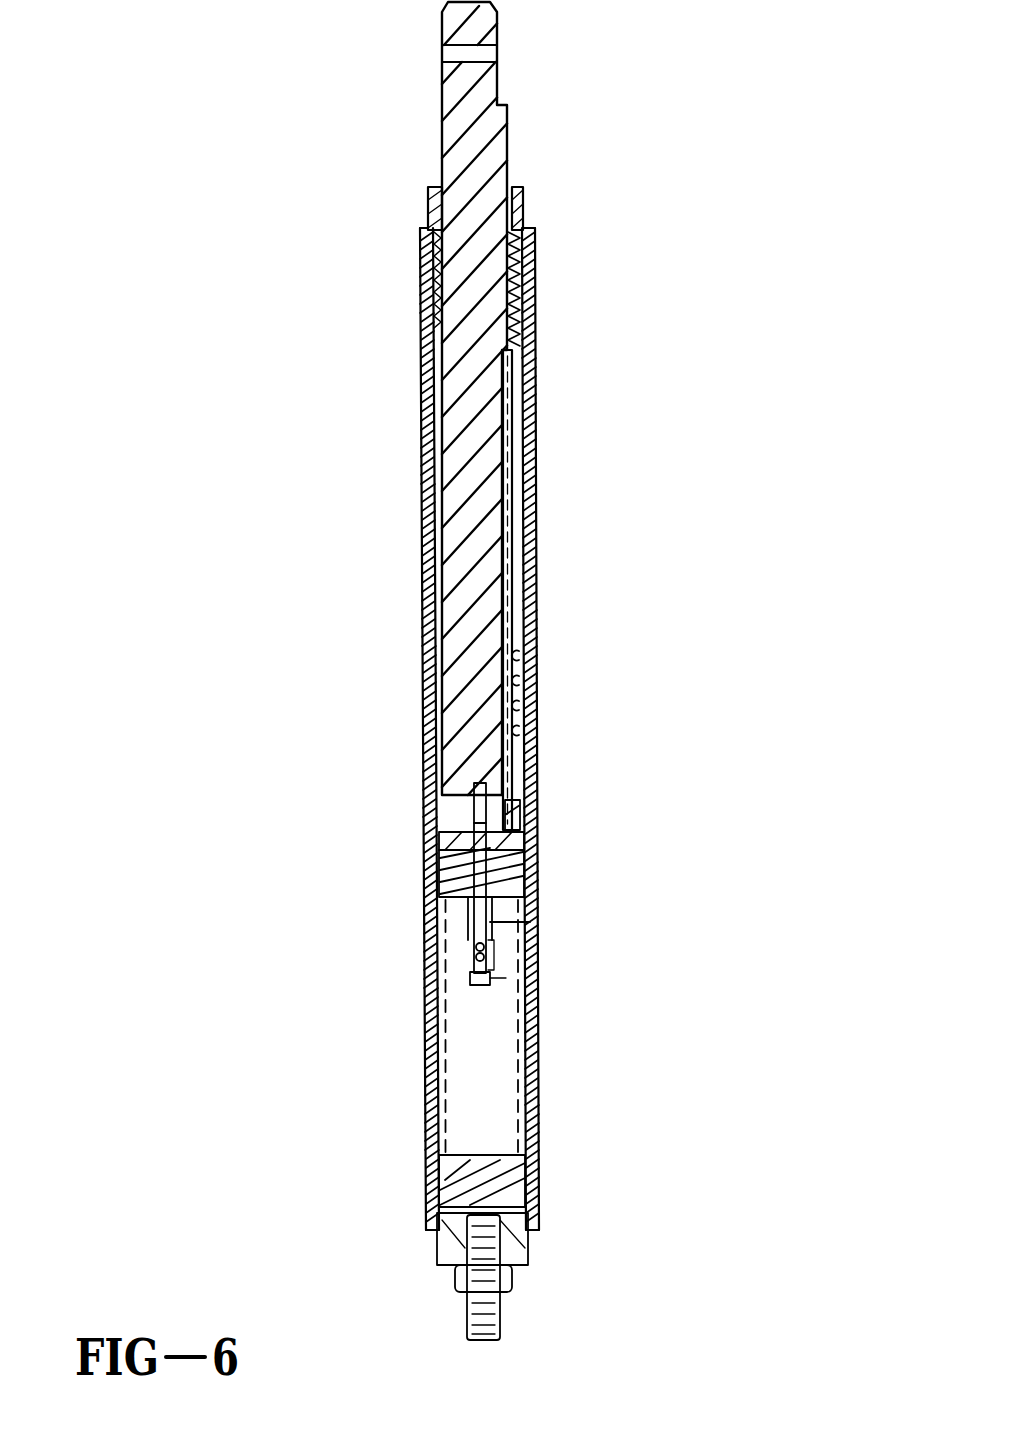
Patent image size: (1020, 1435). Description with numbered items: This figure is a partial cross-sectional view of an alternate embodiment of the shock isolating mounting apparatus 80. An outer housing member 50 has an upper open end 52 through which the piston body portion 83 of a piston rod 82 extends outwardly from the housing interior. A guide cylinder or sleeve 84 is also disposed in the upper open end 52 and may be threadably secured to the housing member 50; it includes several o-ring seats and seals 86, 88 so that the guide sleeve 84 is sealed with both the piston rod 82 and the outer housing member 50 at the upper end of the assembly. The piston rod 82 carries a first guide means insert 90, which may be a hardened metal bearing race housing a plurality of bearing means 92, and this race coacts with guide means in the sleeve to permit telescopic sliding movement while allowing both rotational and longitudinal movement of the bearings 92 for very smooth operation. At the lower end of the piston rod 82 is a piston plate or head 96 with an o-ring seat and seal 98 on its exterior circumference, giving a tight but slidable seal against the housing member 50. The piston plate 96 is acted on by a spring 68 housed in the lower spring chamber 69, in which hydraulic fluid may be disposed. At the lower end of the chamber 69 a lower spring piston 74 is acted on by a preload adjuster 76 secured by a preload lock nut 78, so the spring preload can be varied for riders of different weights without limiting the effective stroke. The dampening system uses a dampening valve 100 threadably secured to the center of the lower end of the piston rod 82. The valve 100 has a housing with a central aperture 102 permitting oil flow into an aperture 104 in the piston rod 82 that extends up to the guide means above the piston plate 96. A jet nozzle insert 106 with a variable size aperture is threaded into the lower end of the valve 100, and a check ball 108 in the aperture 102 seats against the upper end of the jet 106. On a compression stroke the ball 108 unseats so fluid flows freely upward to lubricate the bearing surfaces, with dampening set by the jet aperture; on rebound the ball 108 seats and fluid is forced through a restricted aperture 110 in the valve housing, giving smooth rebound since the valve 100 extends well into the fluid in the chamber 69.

The outer housing member 50 is at (535, 441).
The upper open end 52 is at (535, 190).
The spring 68 is at (495, 886).
The spring chamber 69 is at (460, 1104).
The lower spring piston 74 is at (530, 1190).
The preload adjuster 76 is at (500, 1322).
The preload lock nut 78 is at (515, 1282).
The shock isolating mounting apparatus 80 is at (392, 376).
The piston rod 82 is at (442, 434).
The piston body portion 83 is at (448, 118).
The guide sleeve 84 is at (437, 607).
The o-ring seat and seal 86 is at (527, 205).
The o-ring seat and seal 88 is at (426, 226).
The first guide means insert 90 is at (510, 492).
The bearing means 92 is at (517, 733).
The piston plate 96 is at (500, 818).
The o-ring seat and seal 98 is at (440, 830).
The dampening valve 100 is at (495, 968).
The central aperture 102 is at (480, 900).
The aperture 104 is at (480, 790).
The jet nozzle insert 106 is at (470, 980).
The check ball 108 is at (478, 948).
The aperture 110 is at (495, 922).